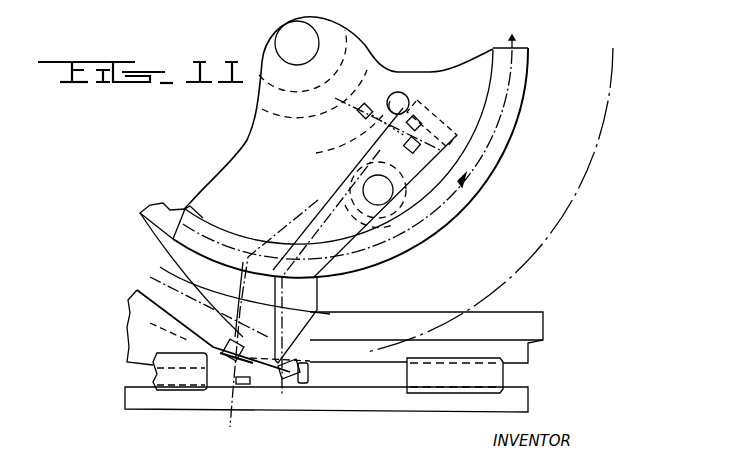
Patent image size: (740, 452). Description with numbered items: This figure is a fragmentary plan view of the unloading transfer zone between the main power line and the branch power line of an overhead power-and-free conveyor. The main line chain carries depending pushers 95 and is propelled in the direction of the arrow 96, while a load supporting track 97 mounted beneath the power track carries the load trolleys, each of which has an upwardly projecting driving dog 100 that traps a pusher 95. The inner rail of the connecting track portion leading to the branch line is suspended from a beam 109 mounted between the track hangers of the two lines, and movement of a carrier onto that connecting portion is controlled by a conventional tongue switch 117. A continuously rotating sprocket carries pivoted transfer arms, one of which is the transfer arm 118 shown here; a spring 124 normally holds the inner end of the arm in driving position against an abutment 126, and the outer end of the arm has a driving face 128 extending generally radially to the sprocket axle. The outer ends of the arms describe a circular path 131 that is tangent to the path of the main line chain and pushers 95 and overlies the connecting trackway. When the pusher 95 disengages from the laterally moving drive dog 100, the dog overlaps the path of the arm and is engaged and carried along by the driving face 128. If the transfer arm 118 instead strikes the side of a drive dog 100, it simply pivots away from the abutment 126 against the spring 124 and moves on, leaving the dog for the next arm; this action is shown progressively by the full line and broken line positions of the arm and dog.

The pusher 95 is at (306, 384).
The arrow 96 is at (522, 375).
The load supporting track 97 is at (390, 390).
The driving dog 100 is at (215, 400).
The beam 109 is at (493, 330).
The tongue switch 117 is at (140, 350).
The transfer arm 118 is at (318, 300).
The spring 124 is at (372, 132).
The abutment 126 is at (408, 92).
The driving face 128 is at (158, 270).
The circular path 131 is at (538, 258).